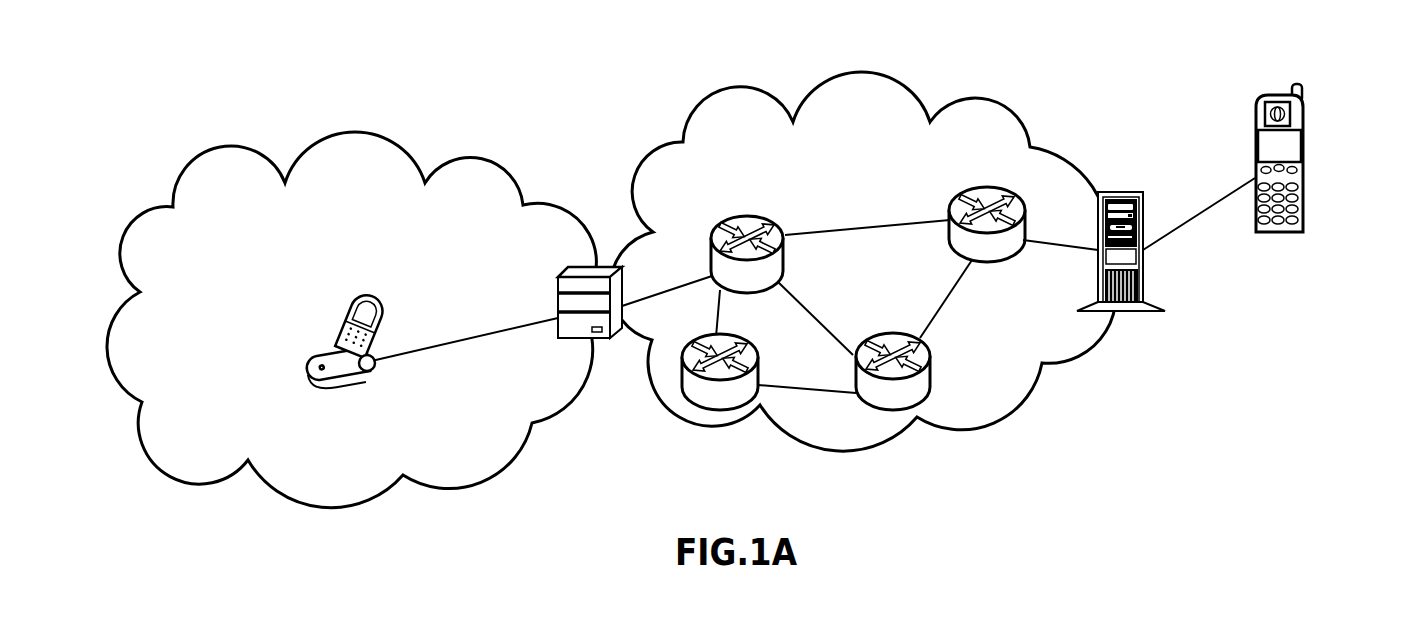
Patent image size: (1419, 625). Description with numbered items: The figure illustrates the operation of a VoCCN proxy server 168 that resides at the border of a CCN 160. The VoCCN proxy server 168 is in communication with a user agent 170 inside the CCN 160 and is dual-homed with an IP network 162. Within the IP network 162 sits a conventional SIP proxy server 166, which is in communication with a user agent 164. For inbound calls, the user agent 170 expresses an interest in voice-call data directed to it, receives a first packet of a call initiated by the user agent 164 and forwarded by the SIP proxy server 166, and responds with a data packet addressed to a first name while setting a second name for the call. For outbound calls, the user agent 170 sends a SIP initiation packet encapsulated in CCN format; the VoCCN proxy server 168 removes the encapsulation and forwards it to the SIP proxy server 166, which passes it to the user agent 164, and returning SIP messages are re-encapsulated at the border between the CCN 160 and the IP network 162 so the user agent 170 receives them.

The CCN 160 is at (351, 320).
The IP network 162 is at (862, 261).
The user agent 164 is at (1305, 125).
The SIP proxy server 166 is at (1142, 193).
The VoCCN proxy server 168 is at (557, 272).
The user agent 170 is at (300, 358).